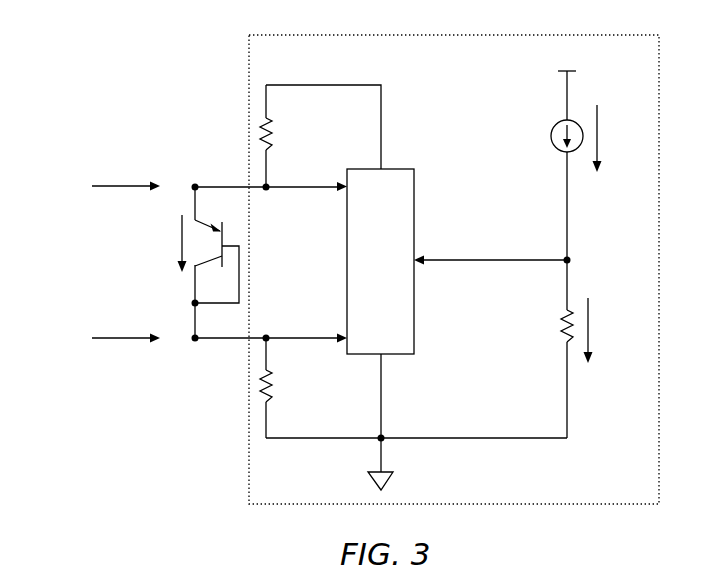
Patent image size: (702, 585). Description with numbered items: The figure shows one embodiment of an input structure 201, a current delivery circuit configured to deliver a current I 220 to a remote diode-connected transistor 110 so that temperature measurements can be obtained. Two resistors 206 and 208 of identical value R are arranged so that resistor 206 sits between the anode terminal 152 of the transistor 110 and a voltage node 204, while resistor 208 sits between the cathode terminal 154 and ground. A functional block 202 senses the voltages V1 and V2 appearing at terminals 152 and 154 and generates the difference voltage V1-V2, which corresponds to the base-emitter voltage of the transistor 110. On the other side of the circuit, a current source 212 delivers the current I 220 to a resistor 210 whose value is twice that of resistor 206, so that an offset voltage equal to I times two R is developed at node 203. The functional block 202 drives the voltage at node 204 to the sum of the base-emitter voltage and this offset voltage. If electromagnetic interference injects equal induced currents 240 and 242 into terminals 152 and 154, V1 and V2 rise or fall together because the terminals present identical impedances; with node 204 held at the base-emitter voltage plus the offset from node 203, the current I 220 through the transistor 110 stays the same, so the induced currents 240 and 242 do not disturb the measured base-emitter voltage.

The input structure 201 is at (454, 269).
The functional block 202 is at (380, 261).
The anode terminal 152 is at (195, 188).
The cathode terminal 154 is at (195, 337).
The EMI induced current 240 is at (125, 174).
The EMI induced current 242 is at (125, 325).
The current I 220 is at (390, 234).
The transistor 110 is at (223, 233).
The resistor 206 is at (258, 130).
The voltage node 204 is at (381, 85).
The resistor 208 is at (259, 384).
The current source 212 is at (551, 136).
The node 203 is at (567, 260).
The resistor 210 is at (562, 313).